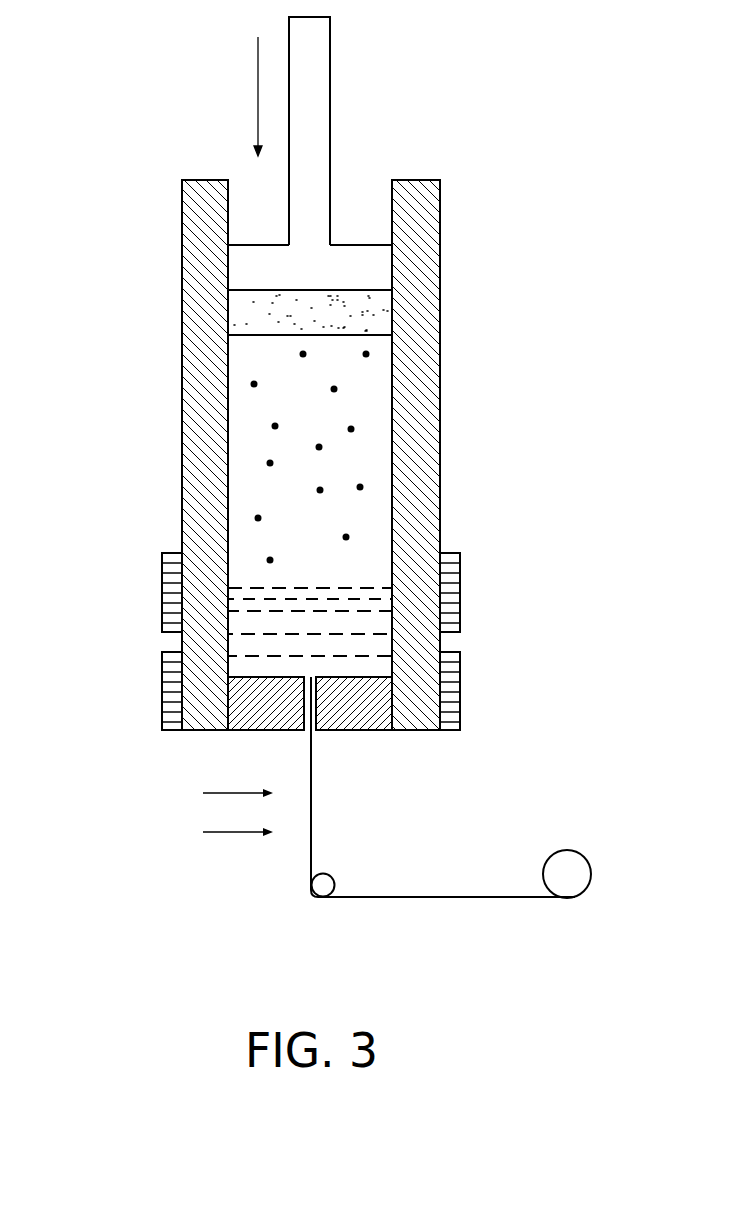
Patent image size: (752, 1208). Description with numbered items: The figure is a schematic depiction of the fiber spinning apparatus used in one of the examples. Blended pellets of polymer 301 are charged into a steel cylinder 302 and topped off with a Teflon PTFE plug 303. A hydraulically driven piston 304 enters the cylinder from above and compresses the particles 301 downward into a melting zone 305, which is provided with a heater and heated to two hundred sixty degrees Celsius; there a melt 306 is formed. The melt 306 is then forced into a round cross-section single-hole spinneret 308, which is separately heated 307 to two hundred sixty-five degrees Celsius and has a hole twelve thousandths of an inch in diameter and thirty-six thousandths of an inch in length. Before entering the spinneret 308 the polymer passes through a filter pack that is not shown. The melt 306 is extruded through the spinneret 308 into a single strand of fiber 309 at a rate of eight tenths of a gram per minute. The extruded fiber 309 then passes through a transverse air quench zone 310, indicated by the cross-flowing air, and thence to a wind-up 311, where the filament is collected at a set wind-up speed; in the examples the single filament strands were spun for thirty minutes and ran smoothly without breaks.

The blended pellets of polymer 301 is at (351, 429).
The steel cylinder 302 is at (440, 300).
The Teflon PTFE plug 303 is at (270, 311).
The hydraulically driven piston 304 is at (355, 244).
The melting zone 305 is at (163, 590).
The melt 306 is at (283, 618).
The separately heated spinneret heater 307 is at (460, 682).
The round cross-section single-hole spinneret 308 is at (353, 730).
The single strand of fiber 309 is at (448, 898).
The transverse air quench zone 310 is at (215, 833).
The wind-up 311 is at (578, 852).